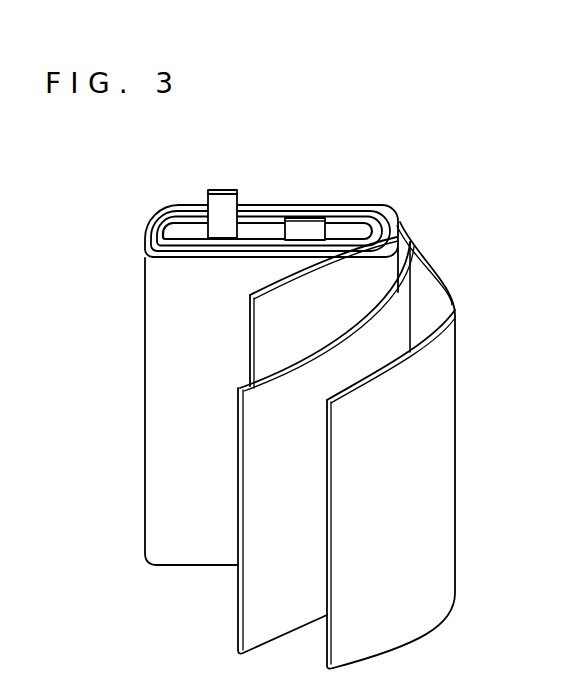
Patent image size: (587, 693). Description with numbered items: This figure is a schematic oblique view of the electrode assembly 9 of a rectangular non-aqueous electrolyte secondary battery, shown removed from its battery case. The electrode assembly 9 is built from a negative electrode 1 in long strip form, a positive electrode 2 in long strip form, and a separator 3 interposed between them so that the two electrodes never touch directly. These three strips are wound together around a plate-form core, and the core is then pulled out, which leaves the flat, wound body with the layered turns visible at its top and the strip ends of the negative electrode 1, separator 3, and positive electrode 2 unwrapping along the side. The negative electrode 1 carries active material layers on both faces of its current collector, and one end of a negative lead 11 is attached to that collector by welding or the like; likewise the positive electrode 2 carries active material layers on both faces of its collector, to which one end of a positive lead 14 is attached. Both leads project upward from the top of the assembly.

The negative electrode 1 is at (375, 277).
The positive electrode 2 is at (430, 482).
The separator 3 is at (387, 330).
The electrode assembly 9 is at (357, 196).
The negative lead 11 is at (223, 193).
The positive lead 14 is at (307, 228).